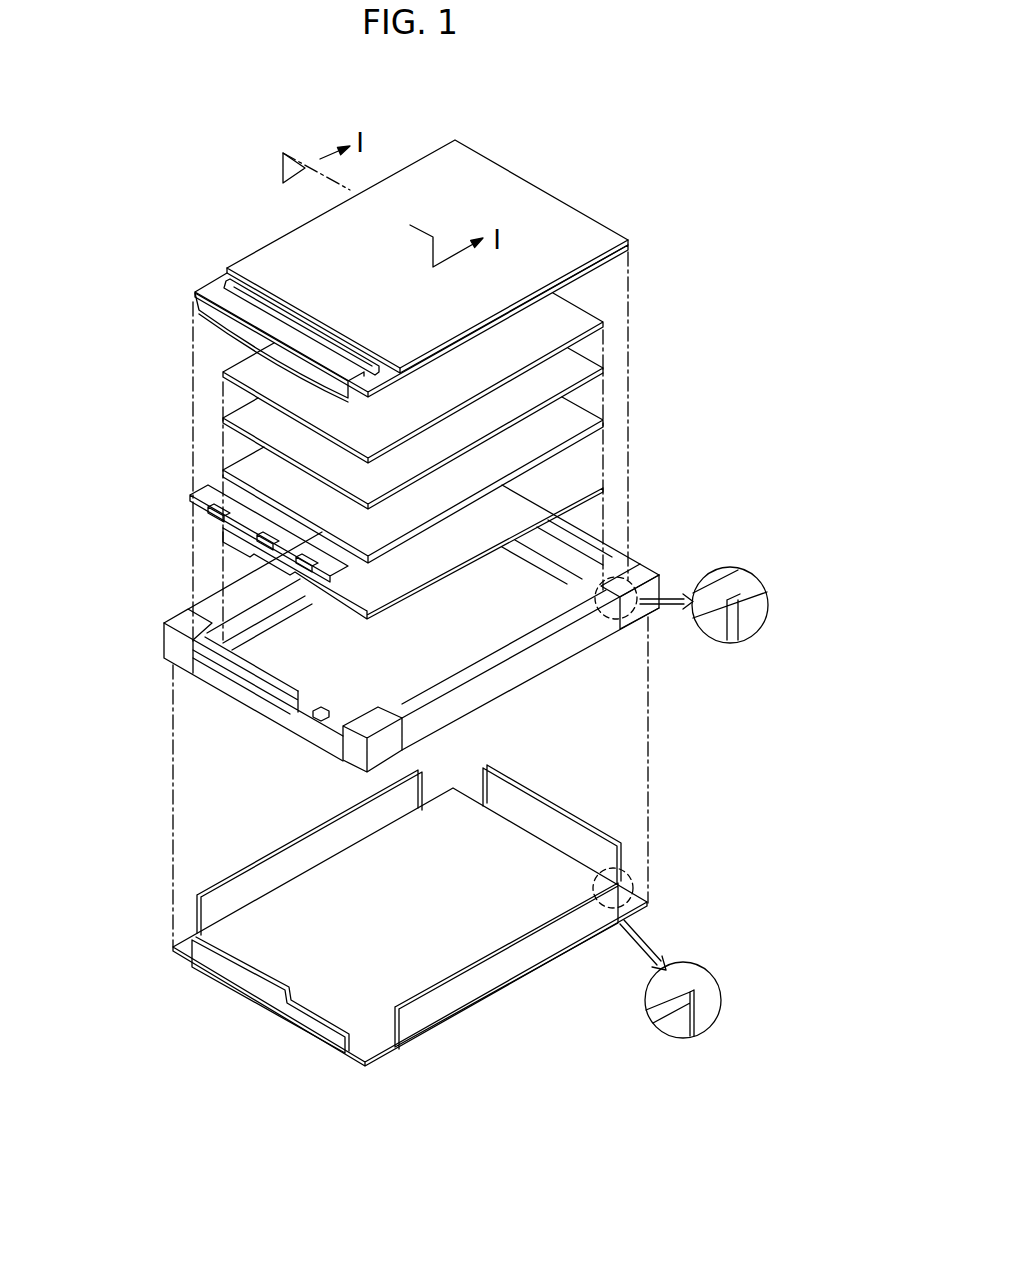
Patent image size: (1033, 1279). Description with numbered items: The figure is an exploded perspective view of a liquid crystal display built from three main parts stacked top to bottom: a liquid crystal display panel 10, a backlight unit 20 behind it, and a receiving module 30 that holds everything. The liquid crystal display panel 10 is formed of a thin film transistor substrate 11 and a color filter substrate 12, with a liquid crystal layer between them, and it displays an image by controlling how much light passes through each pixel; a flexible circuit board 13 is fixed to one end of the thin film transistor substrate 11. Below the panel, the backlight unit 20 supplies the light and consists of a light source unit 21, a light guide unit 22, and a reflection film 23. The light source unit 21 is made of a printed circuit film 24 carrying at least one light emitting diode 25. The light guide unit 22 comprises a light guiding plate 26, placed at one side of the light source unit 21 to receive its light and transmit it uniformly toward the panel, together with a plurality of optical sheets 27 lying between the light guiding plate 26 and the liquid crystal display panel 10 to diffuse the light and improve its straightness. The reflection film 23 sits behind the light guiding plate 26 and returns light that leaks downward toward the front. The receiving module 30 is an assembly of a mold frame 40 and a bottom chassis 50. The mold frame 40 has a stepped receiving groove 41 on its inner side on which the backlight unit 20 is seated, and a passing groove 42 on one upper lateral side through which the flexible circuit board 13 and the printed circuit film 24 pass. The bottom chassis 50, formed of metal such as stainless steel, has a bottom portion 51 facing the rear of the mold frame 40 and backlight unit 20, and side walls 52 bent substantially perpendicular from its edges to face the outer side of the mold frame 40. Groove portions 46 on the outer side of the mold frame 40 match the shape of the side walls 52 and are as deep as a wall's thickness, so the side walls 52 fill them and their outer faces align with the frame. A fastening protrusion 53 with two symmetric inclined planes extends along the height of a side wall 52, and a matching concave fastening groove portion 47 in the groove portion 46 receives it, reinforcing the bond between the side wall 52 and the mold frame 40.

The liquid crystal display panel 10 is at (460, 271).
The thin film transistor substrate 11 is at (632, 247).
The color filter substrate 12 is at (632, 241).
The flexible circuit board 13 is at (212, 295).
The backlight unit 20 is at (90, 580).
The light source unit 21 is at (140, 462).
The light guide unit 22 is at (140, 366).
The reflection film 23 is at (224, 531).
The printed circuit film 24 is at (238, 479).
The light emitting diode 25 is at (213, 511).
The light guiding plate 26 is at (241, 420).
The optical sheet 27 is at (225, 373).
The receiving module 30 is at (738, 698).
The mold frame 40 is at (466, 626).
The receiving groove 41 is at (617, 558).
The passing groove 42 is at (291, 722).
The groove portion 46 is at (584, 571).
The fastening groove portion 47 is at (731, 598).
The bottom chassis 50 is at (457, 916).
The bottom portion 51 is at (370, 1045).
The side wall 52 is at (522, 808).
The fastening protrusion 53 is at (690, 980).